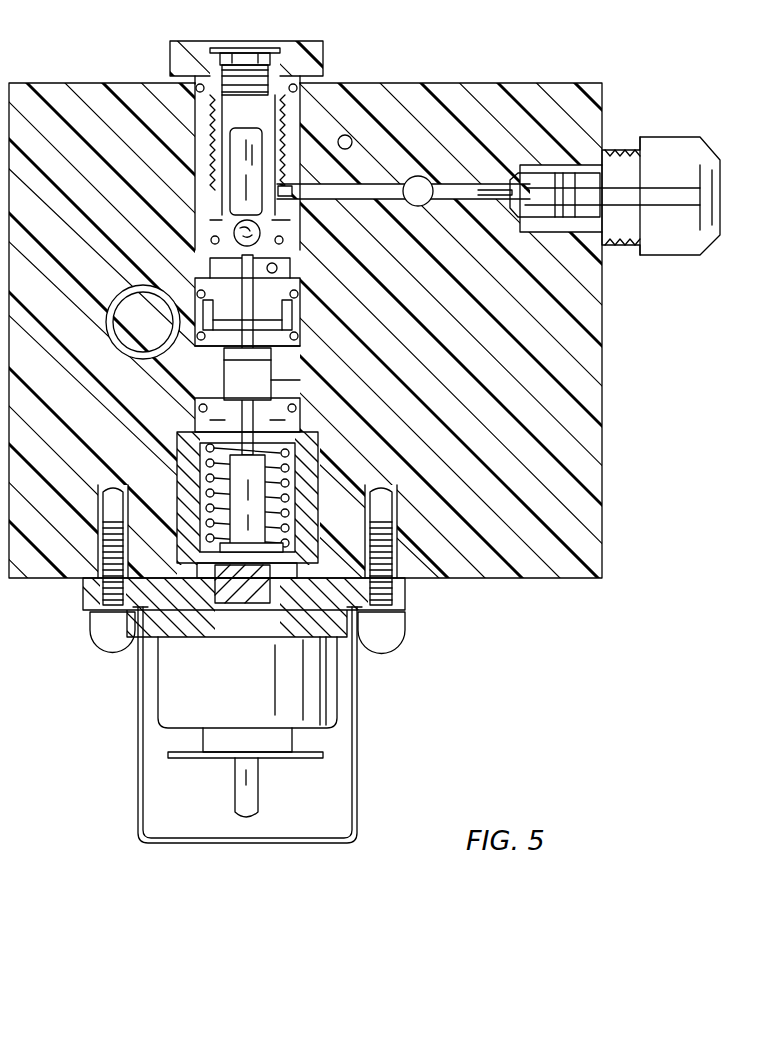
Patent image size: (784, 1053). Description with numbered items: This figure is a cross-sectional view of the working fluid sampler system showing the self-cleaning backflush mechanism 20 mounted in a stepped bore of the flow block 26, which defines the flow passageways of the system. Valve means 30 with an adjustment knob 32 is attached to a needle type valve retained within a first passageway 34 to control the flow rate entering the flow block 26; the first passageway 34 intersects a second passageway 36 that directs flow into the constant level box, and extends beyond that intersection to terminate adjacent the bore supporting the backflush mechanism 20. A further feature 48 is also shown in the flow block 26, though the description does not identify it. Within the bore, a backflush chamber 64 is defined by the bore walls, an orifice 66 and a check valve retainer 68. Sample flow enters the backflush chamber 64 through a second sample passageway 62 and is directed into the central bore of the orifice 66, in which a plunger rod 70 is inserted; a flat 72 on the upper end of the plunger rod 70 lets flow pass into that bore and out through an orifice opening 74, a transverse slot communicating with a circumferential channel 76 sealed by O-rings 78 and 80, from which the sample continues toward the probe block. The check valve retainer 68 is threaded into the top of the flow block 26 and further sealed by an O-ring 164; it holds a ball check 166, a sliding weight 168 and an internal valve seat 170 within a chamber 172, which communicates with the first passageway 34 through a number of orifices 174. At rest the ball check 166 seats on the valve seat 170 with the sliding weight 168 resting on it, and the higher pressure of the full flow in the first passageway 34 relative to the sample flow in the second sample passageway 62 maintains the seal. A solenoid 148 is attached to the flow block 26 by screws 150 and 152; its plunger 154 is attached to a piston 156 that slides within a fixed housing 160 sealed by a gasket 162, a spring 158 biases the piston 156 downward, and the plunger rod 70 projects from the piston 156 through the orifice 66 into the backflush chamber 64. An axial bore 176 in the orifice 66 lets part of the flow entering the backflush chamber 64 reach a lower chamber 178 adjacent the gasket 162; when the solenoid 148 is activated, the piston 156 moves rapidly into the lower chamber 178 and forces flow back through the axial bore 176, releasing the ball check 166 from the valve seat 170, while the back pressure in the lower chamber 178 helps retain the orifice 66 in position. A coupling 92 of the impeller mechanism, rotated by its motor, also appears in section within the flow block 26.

The self-cleaning backflush mechanism 20 is at (362, 753).
The flow block 26 is at (583, 352).
The valve means 30 is at (552, 180).
The adjustment knob 32 is at (655, 250).
The first passageway 34 is at (371, 183).
The second passageway 36 is at (418, 190).
The passage hole 48 is at (347, 135).
The second sample passageway 62 is at (263, 268).
The backflush chamber 64 is at (213, 262).
The orifice 66 is at (300, 343).
The check valve retainer 68 is at (190, 42).
The plunger rod 70 is at (262, 388).
The flat 72 is at (280, 268).
The orifice opening 74 is at (185, 282).
The circumferential channel 76 is at (293, 318).
The O-ring 78 is at (296, 300).
The O-ring 80 is at (298, 328).
The coupling 92 is at (110, 340).
The solenoid 148 is at (172, 705).
The screw 150 is at (112, 640).
The screw 152 is at (386, 645).
The plunger 154 is at (248, 795).
The piston 156 is at (206, 404).
The spring 158 is at (290, 485).
The fixed housing 160 is at (305, 460).
The gasket 162 is at (312, 432).
The O-ring 164 is at (296, 85).
The ball check 166 is at (262, 234).
The sliding weight 168 is at (236, 190).
The internal valve seat 170 is at (212, 240).
The chamber 172 is at (237, 113).
The orifices 174 is at (284, 187).
The axial bore 176 is at (197, 390).
The lower chamber 178 is at (298, 392).